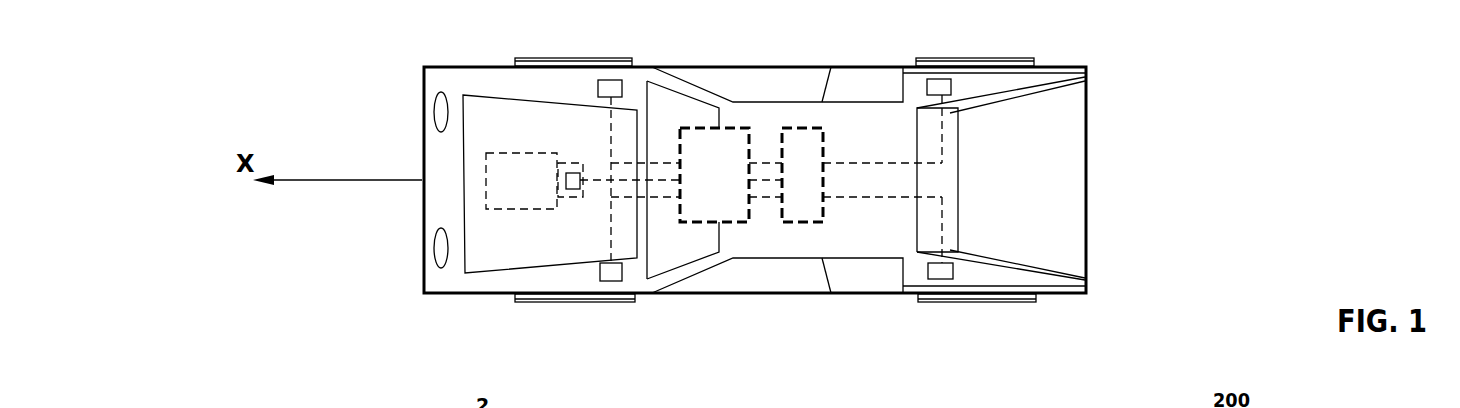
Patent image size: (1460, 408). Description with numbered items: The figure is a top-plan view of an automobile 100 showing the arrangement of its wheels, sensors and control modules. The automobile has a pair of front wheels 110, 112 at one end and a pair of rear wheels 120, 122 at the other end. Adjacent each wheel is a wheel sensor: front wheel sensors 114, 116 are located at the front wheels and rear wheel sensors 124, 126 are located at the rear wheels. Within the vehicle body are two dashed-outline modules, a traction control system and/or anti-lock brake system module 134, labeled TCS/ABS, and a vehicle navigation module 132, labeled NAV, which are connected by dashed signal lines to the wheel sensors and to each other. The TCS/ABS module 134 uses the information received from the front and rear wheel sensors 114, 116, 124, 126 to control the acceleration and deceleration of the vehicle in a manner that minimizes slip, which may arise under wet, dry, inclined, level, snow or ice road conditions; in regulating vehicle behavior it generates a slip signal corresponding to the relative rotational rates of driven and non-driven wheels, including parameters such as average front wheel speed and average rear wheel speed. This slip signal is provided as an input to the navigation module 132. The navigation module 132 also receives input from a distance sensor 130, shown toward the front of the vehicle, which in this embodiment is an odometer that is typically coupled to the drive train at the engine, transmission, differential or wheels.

The automobile 100 is at (1088, 155).
The front wheel 110 is at (625, 58).
The front wheel 112 is at (628, 302).
The front wheel sensor 114 is at (607, 97).
The front wheel sensor 116 is at (611, 263).
The rear wheel 120 is at (1011, 58).
The rear wheel 122 is at (1013, 302).
The rear wheel sensor 124 is at (946, 96).
The rear wheel sensor 126 is at (947, 263).
The distance sensor 130 is at (573, 173).
The vehicle navigation module 132 is at (799, 128).
The TCS/ABS module 134 is at (718, 128).